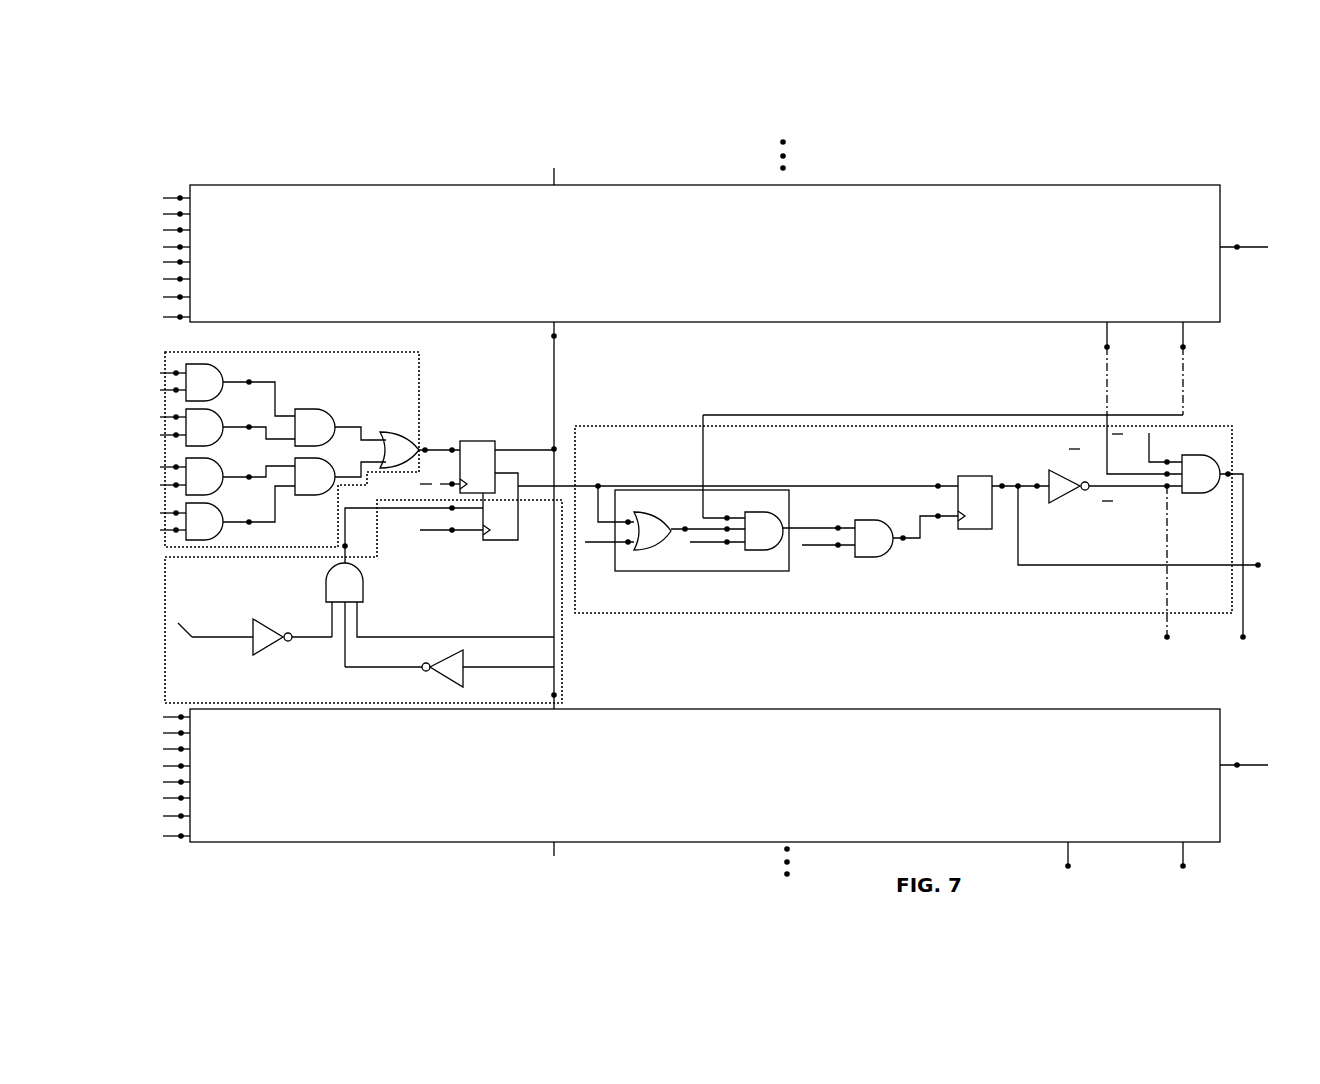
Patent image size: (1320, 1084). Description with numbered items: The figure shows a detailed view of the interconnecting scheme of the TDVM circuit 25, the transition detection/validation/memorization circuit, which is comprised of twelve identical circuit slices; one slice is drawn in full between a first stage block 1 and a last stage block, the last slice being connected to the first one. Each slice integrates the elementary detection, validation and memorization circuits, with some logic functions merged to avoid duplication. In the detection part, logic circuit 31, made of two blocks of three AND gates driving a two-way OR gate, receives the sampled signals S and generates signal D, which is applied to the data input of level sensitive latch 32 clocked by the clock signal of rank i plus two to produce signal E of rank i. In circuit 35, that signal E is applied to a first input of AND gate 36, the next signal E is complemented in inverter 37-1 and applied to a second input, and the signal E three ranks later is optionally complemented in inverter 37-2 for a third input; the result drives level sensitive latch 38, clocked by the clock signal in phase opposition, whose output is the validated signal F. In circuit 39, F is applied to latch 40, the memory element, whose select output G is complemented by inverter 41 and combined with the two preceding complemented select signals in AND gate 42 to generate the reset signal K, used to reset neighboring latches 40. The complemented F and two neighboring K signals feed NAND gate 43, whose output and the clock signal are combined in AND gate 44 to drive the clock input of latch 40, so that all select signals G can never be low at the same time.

The first stage block of the selection circuit 1 is at (696, 222).
The TDVM circuit 25 is at (710, 511).
The logic circuit 31 is at (419, 356).
The level sensitive latch 32 is at (479, 441).
The circuit 35 is at (380, 601).
The AND gate 36 is at (363, 590).
The inverter 37-1 is at (462, 680).
The inverter 37-2 is at (268, 646).
The level sensitive latch 38 is at (505, 541).
The circuit 39 is at (920, 533).
The latch 40 is at (970, 530).
The inverter 41 is at (1068, 497).
The AND gate 42 is at (1200, 494).
The NAND gate 43 is at (685, 572).
The AND gate 44 is at (880, 558).